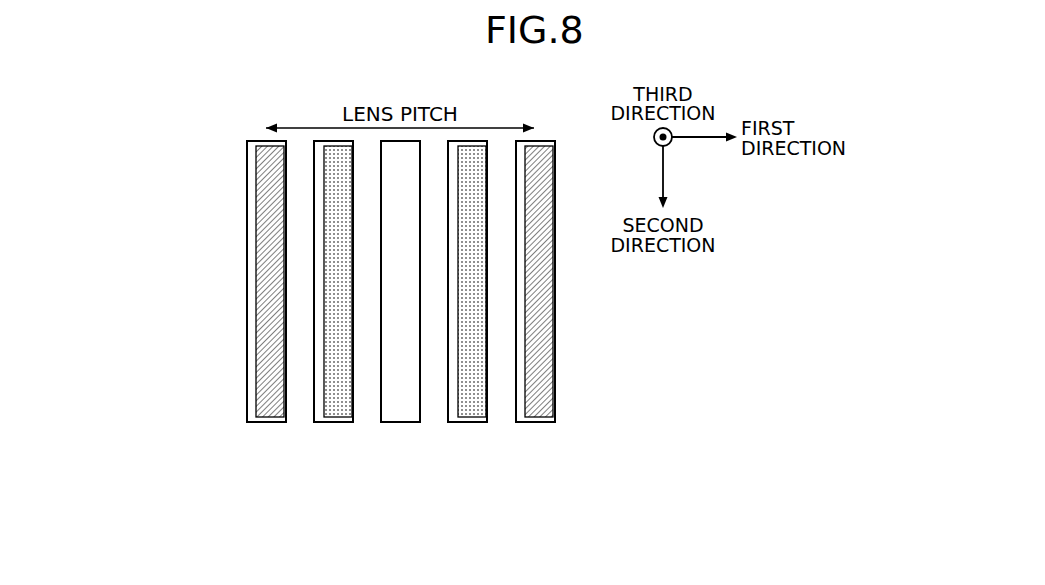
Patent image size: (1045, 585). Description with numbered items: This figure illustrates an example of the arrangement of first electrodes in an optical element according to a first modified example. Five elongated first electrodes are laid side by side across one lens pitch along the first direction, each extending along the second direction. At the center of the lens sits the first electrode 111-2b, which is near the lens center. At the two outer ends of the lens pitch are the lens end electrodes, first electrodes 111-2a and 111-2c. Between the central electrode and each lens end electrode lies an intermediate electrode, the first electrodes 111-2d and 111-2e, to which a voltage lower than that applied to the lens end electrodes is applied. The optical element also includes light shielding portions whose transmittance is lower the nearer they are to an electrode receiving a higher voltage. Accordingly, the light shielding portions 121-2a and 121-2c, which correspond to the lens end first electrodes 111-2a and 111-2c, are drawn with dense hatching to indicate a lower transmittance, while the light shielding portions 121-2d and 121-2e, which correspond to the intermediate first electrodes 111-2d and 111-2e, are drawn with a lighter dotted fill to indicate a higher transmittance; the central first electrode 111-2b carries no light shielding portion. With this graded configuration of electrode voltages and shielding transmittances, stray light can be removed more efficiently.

The first electrode 111-2a is at (251, 422).
The light shielding portion 121-2a is at (272, 422).
The first electrode 111-2d is at (325, 422).
The light shielding portion 121-2d is at (338, 422).
The first electrode 111-2b is at (402, 422).
The first electrode 111-2e is at (457, 422).
The light shielding portion 121-2e is at (477, 422).
The first electrode 111-2c is at (537, 422).
The light shielding portion 121-2c is at (548, 422).